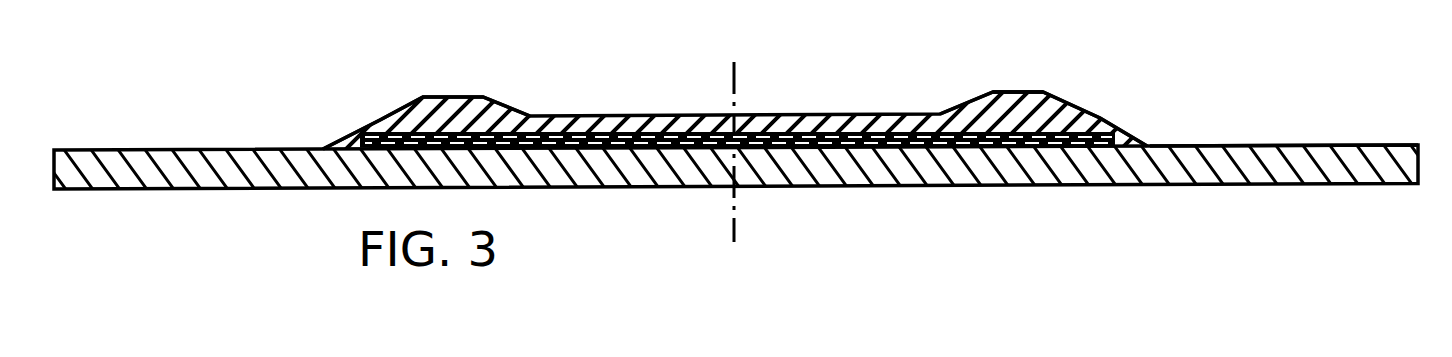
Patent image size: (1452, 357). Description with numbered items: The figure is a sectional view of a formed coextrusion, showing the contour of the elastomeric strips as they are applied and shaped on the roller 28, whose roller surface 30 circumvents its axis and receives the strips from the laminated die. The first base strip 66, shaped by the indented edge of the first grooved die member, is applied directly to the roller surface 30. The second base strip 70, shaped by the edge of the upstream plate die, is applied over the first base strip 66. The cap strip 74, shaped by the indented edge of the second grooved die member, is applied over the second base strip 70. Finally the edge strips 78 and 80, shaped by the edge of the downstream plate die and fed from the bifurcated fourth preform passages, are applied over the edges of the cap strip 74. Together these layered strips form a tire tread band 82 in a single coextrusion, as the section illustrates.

The roller 28 is at (1376, 141).
The roller surface 30 is at (1250, 145).
The first base strip 66 is at (653, 143).
The second base strip 70 is at (841, 128).
The cap strip 74 is at (665, 122).
The edge strip 78 is at (1093, 117).
The edge strip 80 is at (372, 138).
The tire tread band 82 is at (1014, 87).